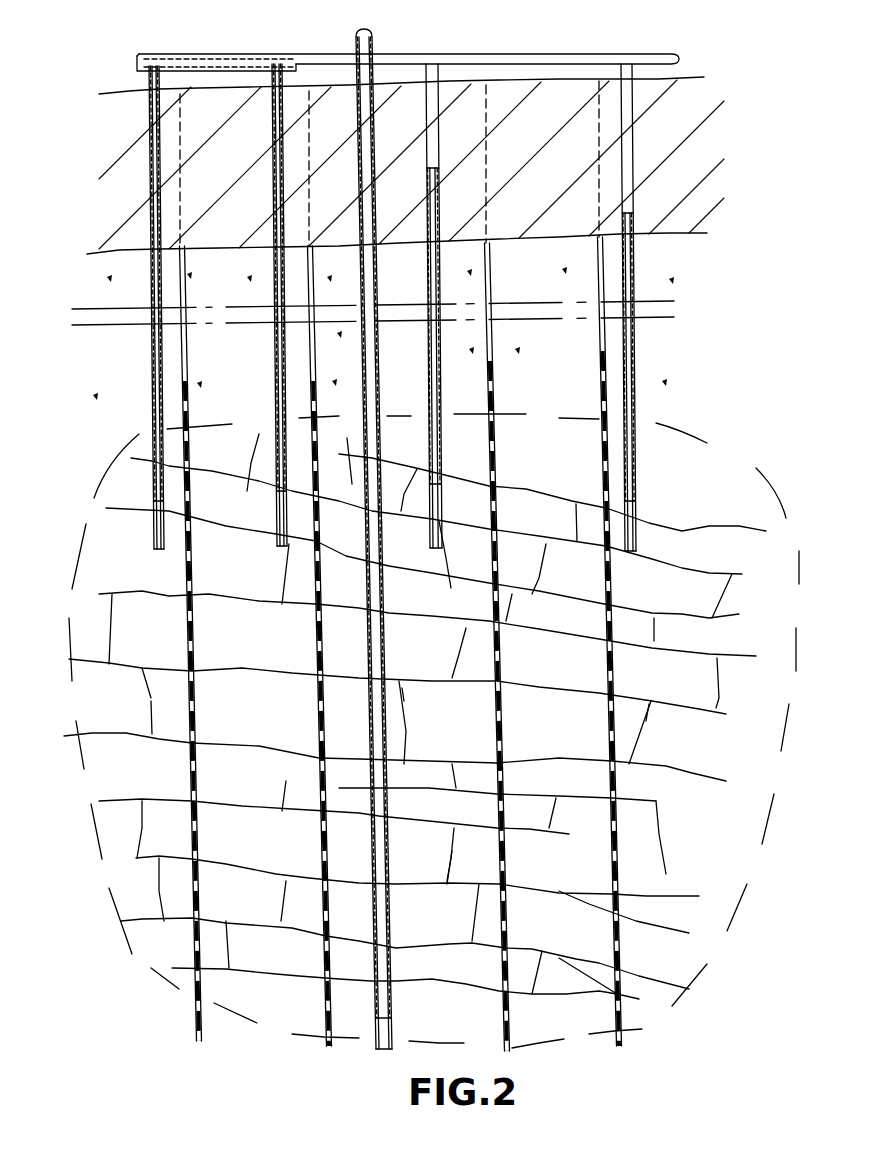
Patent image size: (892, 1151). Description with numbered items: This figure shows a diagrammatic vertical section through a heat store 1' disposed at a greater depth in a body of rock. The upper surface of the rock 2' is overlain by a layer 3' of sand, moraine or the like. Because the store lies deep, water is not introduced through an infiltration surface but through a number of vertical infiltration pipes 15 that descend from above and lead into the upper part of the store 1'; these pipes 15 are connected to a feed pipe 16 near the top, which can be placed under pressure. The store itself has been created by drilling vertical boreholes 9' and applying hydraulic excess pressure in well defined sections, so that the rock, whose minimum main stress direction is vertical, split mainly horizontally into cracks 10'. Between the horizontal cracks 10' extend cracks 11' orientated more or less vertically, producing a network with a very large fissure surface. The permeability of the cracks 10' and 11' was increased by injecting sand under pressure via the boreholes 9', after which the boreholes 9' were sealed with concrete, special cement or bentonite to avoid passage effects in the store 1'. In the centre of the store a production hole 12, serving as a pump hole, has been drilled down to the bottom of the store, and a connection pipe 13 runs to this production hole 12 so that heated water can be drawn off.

The connection pipe 13 is at (374, 533).
The feed pipe 16 is at (600, 40).
The layer of sand, moraine or the like 3' is at (411, 133).
The upper surface of the body of rock 2' is at (397, 300).
The vertical infiltration pipes 15 is at (633, 367).
The heat store 1' is at (431, 731).
The horizontal cracks 10' is at (453, 514).
The vertical boreholes 9' is at (631, 641).
The vertical cracks 11' is at (423, 686).
The production hole 12 is at (390, 1031).